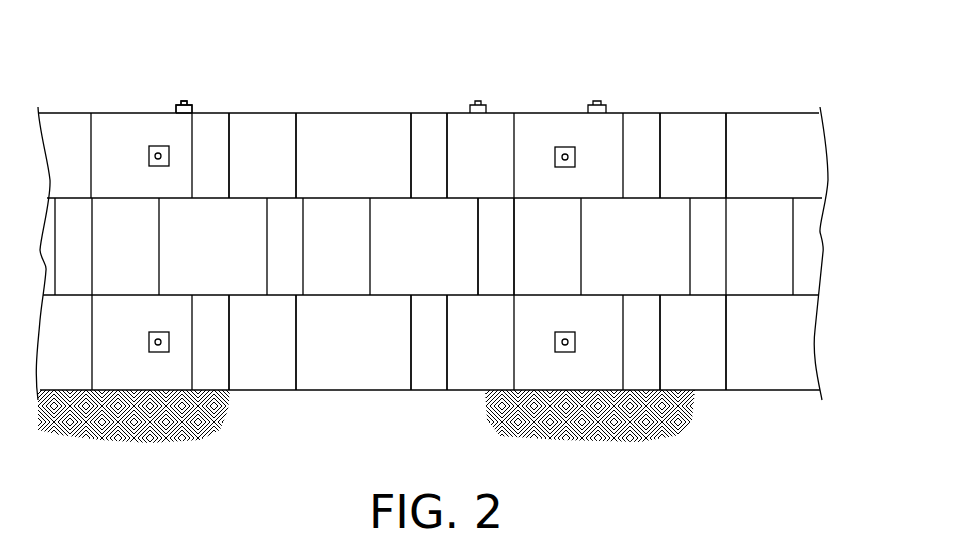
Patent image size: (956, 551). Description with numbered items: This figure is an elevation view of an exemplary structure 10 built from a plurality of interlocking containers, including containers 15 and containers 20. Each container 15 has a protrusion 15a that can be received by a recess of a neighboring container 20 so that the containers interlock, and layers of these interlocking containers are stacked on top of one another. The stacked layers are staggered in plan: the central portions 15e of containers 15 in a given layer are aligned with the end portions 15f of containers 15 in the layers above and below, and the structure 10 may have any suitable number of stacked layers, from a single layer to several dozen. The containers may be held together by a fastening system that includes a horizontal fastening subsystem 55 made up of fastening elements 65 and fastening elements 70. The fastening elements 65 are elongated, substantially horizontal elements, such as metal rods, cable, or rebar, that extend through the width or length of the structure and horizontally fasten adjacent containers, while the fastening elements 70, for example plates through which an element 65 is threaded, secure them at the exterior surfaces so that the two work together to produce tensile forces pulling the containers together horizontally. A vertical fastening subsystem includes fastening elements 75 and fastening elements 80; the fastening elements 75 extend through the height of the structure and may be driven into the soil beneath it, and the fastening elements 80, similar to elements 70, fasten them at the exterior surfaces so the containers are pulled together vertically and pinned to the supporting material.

The structure 10 is at (682, 86).
The container 15 is at (348, 140).
The protrusion 15a is at (430, 137).
The central portion 15e is at (276, 262).
The end portion 15f is at (277, 145).
The container 20 is at (172, 80).
The horizontal fastening subsystem 55 is at (145, 90).
The fastening element 65 is at (149, 156).
The fastening element 70 is at (155, 154).
The fastening element 75 is at (183, 103).
The fastening element 80 is at (193, 110).